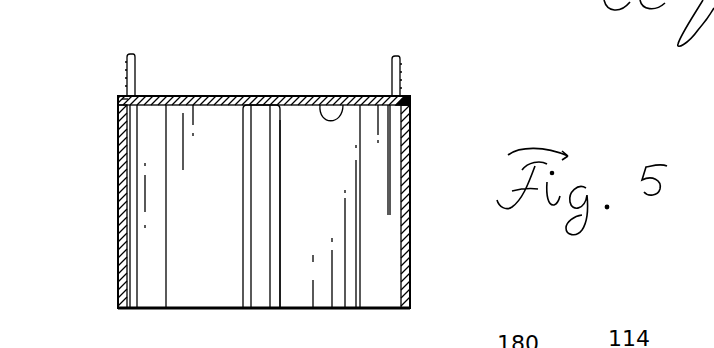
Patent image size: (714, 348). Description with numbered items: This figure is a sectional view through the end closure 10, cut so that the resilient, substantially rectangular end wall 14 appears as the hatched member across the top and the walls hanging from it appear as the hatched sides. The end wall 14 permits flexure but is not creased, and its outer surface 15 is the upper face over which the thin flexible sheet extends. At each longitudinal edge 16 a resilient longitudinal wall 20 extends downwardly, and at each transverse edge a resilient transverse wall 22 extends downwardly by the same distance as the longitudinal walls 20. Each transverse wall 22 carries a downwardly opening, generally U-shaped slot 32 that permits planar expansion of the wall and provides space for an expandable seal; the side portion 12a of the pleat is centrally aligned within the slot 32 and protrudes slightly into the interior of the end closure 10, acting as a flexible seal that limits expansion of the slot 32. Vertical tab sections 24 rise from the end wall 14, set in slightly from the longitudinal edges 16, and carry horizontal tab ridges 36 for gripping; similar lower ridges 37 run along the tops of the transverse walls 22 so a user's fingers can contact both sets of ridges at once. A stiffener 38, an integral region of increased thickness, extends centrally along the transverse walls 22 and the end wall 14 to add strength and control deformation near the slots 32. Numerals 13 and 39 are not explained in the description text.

The end closure 10 is at (104, 243).
The side portion of the pleat 12a is at (258, 127).
The top plate 13 is at (347, 104).
The end wall 14 is at (203, 97).
The outer surface of the end wall 15 is at (320, 105).
The longitudinal edge 16 is at (406, 99).
The longitudinal wall 20 is at (410, 166).
The transverse wall 22 is at (376, 283).
The vertical tab section 24 is at (135, 68).
The U-shaped slot 32 is at (282, 283).
The tab ridge 36 is at (401, 61).
The lower ridge 37 is at (118, 104).
The stiffener 38 is at (316, 224).
The left side wall 39 is at (152, 278).